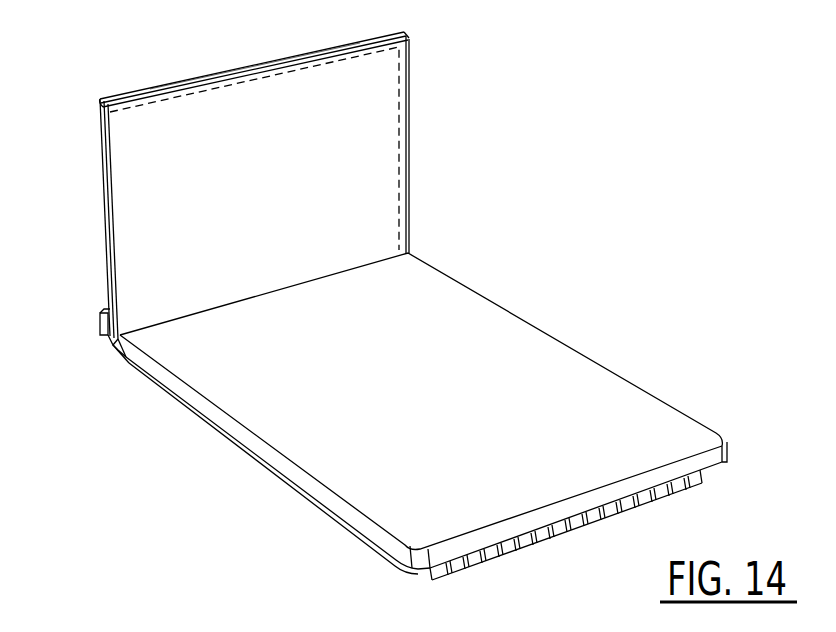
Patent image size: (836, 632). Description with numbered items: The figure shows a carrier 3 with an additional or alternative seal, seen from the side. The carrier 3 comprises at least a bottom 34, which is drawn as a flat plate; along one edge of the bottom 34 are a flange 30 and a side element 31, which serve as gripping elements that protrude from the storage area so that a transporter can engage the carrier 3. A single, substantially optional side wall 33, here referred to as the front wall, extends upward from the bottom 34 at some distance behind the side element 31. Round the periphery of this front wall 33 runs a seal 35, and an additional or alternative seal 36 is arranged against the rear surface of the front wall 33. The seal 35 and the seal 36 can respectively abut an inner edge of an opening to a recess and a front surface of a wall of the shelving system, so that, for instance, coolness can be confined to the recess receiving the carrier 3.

The carrier 3 is at (527, 295).
The flange 30 is at (110, 344).
The side element 31 is at (104, 341).
The side wall 33 is at (383, 171).
The bottom 34 is at (596, 382).
The seal 35 is at (187, 81).
The seal 36 is at (399, 84).